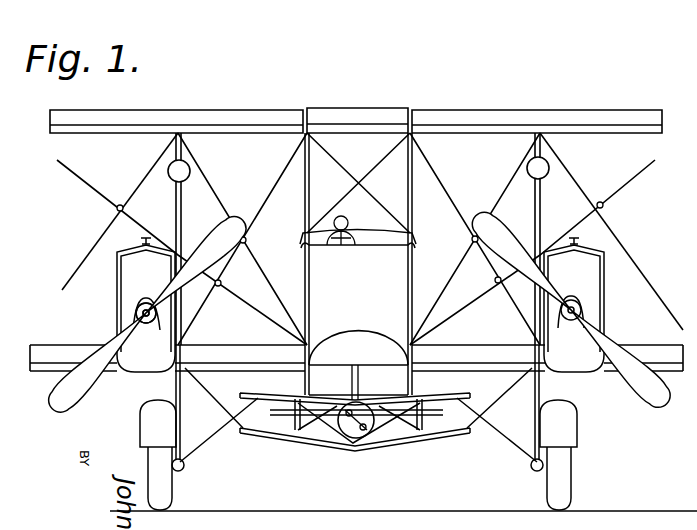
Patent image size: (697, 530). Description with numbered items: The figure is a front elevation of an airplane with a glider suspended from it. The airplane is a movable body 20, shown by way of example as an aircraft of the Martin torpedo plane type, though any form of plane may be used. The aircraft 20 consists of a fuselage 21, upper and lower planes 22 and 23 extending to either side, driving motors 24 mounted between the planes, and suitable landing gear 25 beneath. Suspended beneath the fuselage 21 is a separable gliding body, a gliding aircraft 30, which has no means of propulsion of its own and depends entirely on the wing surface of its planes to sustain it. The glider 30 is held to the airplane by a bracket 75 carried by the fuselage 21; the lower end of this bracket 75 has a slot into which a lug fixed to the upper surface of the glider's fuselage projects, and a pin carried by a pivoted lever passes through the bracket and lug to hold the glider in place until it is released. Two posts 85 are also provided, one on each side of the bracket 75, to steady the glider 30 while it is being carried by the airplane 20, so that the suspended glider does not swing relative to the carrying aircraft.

The movable body 20 is at (358, 183).
The fuselage 21 is at (392, 270).
The upper plane 22 is at (462, 107).
The lower plane 23 is at (445, 345).
The driving motor 24 is at (127, 280).
The landing gear 25 is at (184, 470).
The gliding aircraft 30 is at (368, 445).
The bracket 75 is at (352, 390).
The post 85 is at (309, 380).